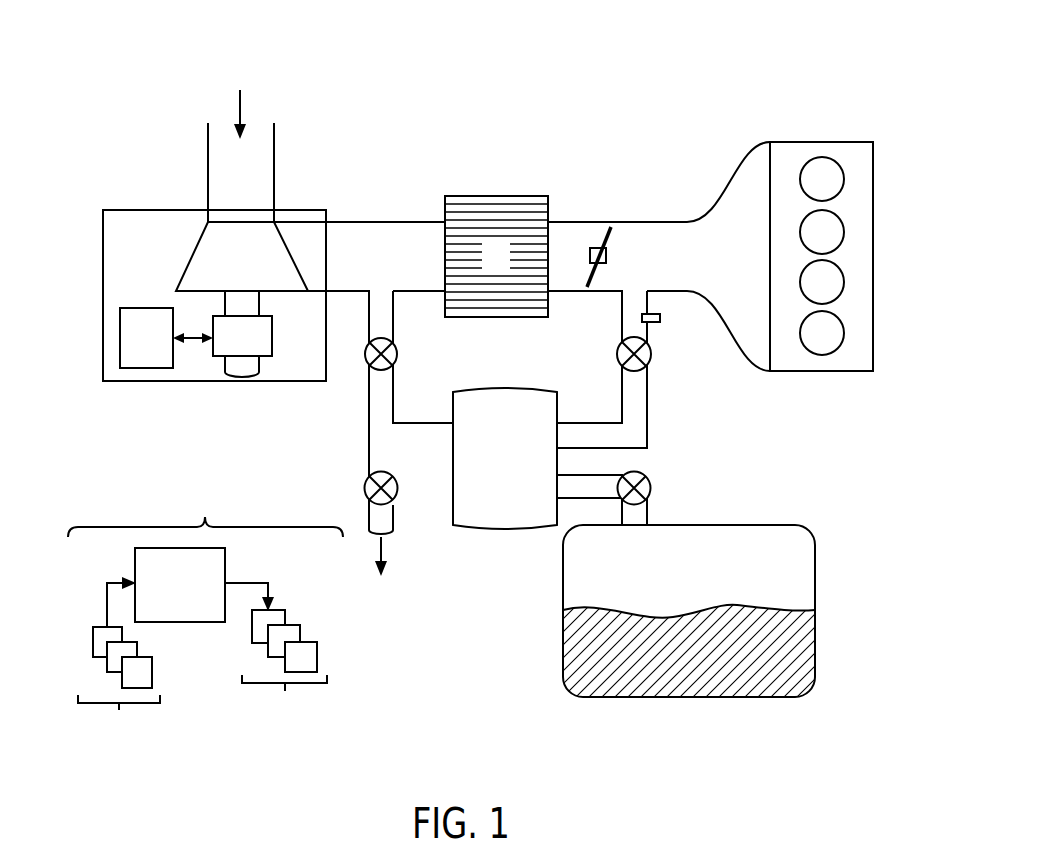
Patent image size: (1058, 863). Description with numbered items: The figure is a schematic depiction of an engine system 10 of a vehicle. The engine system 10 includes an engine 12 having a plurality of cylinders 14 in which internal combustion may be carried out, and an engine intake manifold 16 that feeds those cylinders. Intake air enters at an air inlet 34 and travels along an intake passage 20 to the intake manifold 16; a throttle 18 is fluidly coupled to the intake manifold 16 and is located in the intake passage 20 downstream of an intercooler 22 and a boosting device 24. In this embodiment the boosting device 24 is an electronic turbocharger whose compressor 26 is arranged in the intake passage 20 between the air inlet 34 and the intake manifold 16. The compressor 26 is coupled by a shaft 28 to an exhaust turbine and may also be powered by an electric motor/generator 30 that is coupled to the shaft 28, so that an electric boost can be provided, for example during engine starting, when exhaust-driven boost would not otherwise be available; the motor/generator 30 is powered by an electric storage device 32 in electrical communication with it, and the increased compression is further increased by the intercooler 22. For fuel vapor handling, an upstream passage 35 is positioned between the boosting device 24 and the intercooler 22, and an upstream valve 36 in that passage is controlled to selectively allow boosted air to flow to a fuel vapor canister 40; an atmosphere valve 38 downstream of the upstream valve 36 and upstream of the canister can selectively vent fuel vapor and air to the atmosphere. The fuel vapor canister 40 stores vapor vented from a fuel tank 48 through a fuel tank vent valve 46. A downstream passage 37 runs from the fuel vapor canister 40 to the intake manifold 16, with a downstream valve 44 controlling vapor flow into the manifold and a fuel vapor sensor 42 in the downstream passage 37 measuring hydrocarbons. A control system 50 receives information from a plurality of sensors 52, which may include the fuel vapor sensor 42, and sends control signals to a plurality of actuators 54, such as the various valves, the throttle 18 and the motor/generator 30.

The engine system 10 is at (673, 45).
The engine 12 is at (873, 208).
The cylinders 14 is at (812, 189).
The engine intake manifold 16 is at (722, 267).
The throttle 18 is at (607, 256).
The intake passage 20 is at (457, 149).
The intercooler 22 is at (486, 267).
The boosting device 24 is at (170, 208).
The compressor 26 is at (230, 266).
The shaft 28 is at (260, 302).
The electric motor/generator 30 is at (232, 348).
The electric storage device 32 is at (136, 348).
The air inlet 34 is at (230, 178).
The upstream passage 35 is at (436, 328).
The upstream valve 36 is at (398, 352).
The downstream passage 37 is at (588, 328).
The atmosphere valve 38 is at (398, 487).
The fuel vapor canister 40 is at (495, 455).
The fuel vapor sensor 42 is at (661, 318).
The downstream valve 44 is at (652, 352).
The fuel tank vent valve 46 is at (651, 487).
The fuel tank 48 is at (678, 568).
The control system 50 is at (205, 500).
The sensors 52 is at (119, 733).
The actuators 54 is at (282, 669).